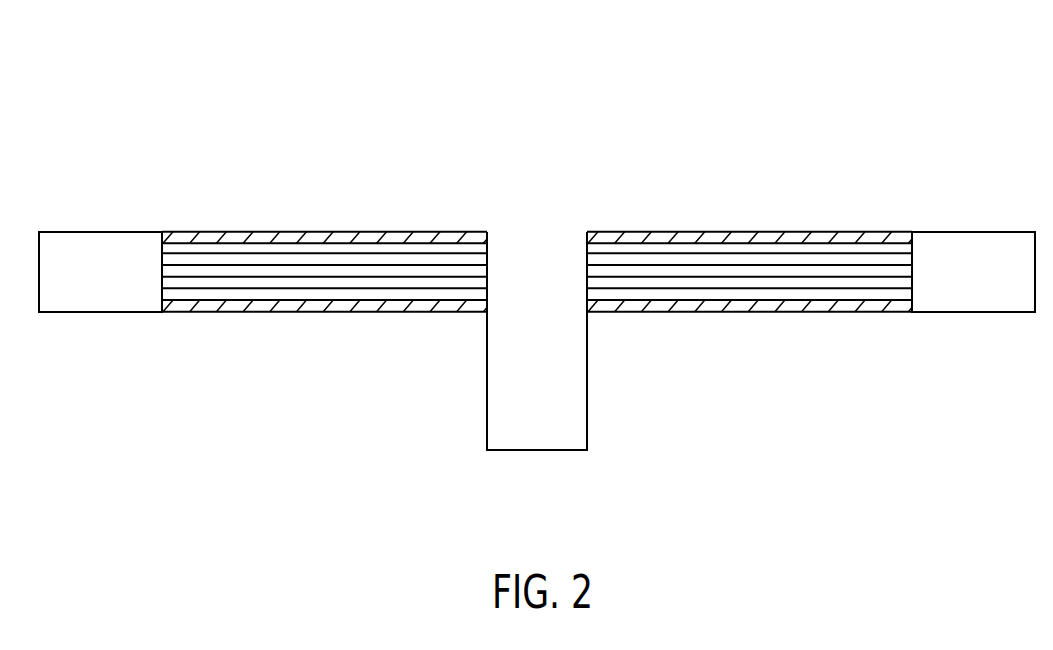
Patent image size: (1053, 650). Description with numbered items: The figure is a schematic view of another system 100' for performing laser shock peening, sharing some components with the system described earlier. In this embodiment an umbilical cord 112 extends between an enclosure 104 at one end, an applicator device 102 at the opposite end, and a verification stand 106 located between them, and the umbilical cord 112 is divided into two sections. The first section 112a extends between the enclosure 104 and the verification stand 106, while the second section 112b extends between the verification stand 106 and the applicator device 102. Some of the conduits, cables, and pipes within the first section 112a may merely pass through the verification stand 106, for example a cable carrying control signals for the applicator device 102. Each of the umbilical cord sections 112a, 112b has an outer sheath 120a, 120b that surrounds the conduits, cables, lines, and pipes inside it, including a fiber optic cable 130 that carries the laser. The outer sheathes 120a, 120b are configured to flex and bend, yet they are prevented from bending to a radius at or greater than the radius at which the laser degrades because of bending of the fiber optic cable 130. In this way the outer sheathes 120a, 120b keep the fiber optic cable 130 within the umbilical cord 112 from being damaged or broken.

The system 100' is at (537, 266).
The applicator device 102 is at (973, 300).
The enclosure 104 is at (82, 305).
The verification stand 106 is at (537, 440).
The umbilical cord 112 is at (450, 199).
The first section 112a is at (324, 288).
The second section 112b is at (749, 288).
The outer sheath 120a is at (196, 237).
The outer sheath 120b is at (632, 237).
The fiber optic cable 130 is at (303, 246).